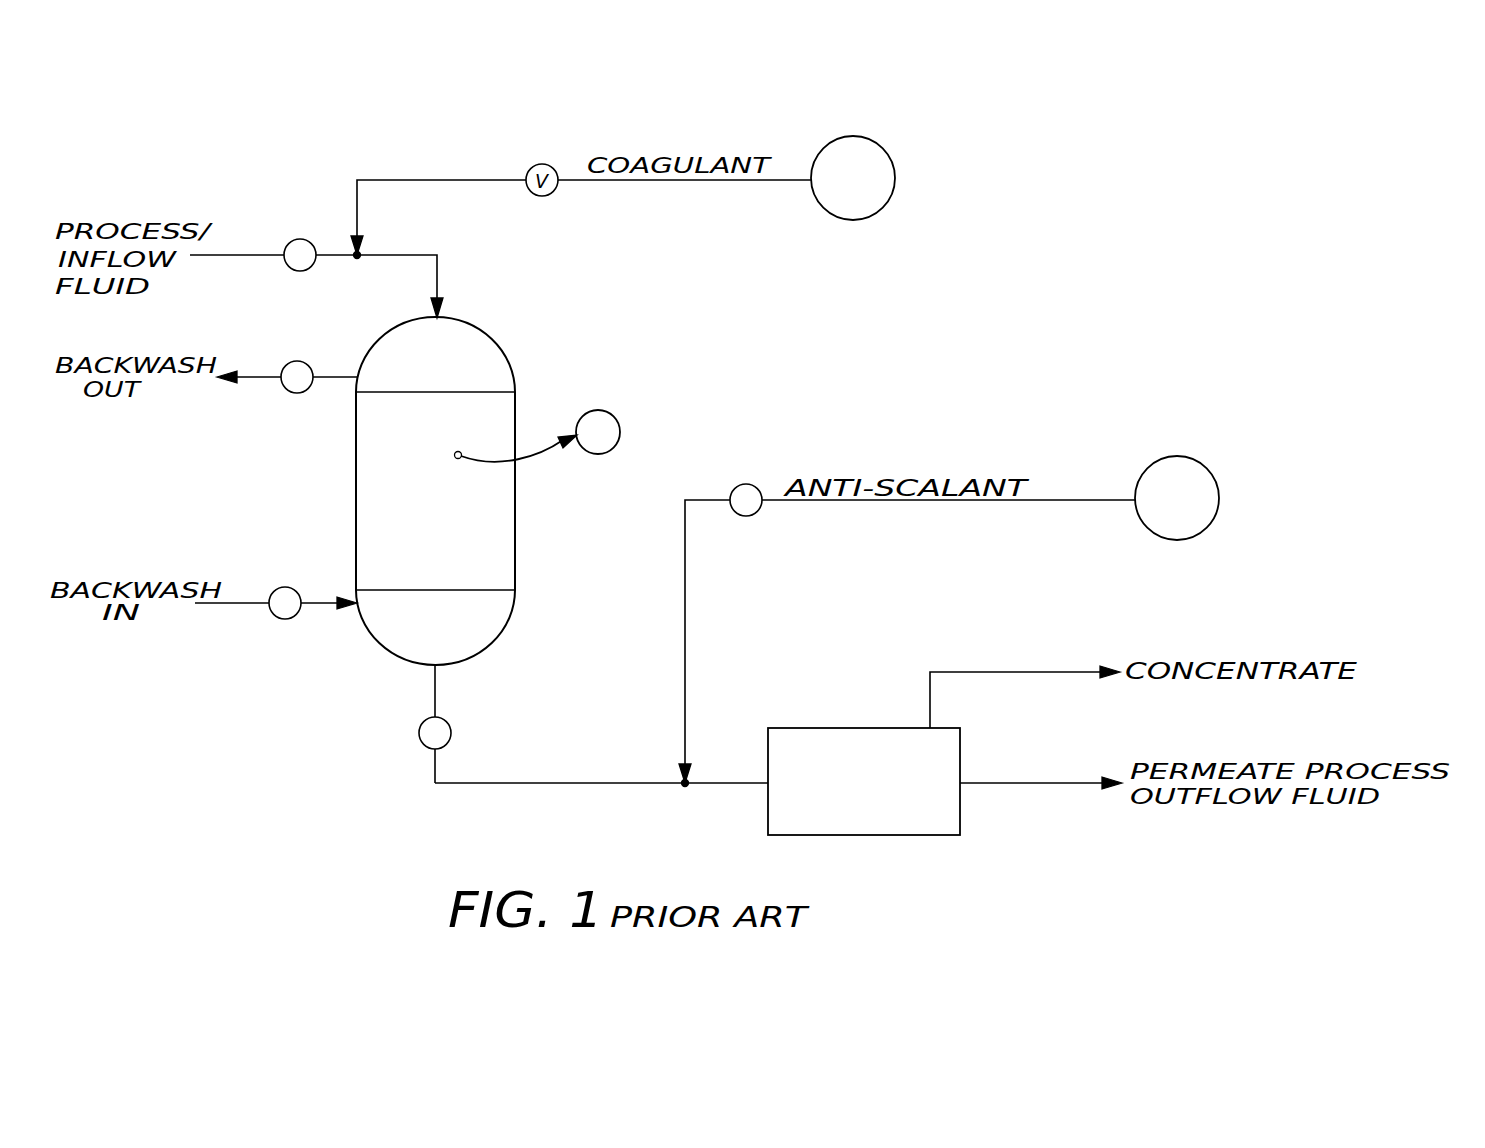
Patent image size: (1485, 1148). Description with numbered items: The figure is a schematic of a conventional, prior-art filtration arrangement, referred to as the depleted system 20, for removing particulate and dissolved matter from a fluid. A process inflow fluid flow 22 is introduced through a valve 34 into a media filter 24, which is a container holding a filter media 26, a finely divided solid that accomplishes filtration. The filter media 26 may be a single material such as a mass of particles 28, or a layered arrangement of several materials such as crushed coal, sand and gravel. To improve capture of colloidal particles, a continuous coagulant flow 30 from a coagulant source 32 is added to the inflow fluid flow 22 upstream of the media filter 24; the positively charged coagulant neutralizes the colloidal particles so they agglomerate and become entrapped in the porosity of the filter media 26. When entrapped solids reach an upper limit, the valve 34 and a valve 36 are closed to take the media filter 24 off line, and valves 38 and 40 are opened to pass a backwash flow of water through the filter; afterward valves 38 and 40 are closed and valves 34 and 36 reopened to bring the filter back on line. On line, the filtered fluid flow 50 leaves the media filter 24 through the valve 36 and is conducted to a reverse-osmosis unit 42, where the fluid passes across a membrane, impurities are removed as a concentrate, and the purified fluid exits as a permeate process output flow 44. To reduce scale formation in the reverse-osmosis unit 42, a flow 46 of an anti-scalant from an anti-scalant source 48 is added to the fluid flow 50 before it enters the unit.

The depleted system 20 is at (990, 308).
The process inflow fluid flow 22 is at (250, 255).
The media filter 24 is at (515, 512).
The filter media 26 is at (483, 413).
The particles 28 is at (620, 432).
The coagulant flow 30 is at (356, 188).
The coagulant source 32 is at (858, 220).
The valve 34 is at (303, 271).
The valve 36 is at (419, 733).
The valve 38 is at (278, 617).
The valve 40 is at (297, 393).
The reverse-osmosis unit 42 is at (830, 728).
The permeate process output flow 44 is at (1043, 783).
The flow of anti-scalant 46 is at (685, 625).
The anti-scalant source 48 is at (1205, 461).
The fluid flow 50 is at (508, 783).